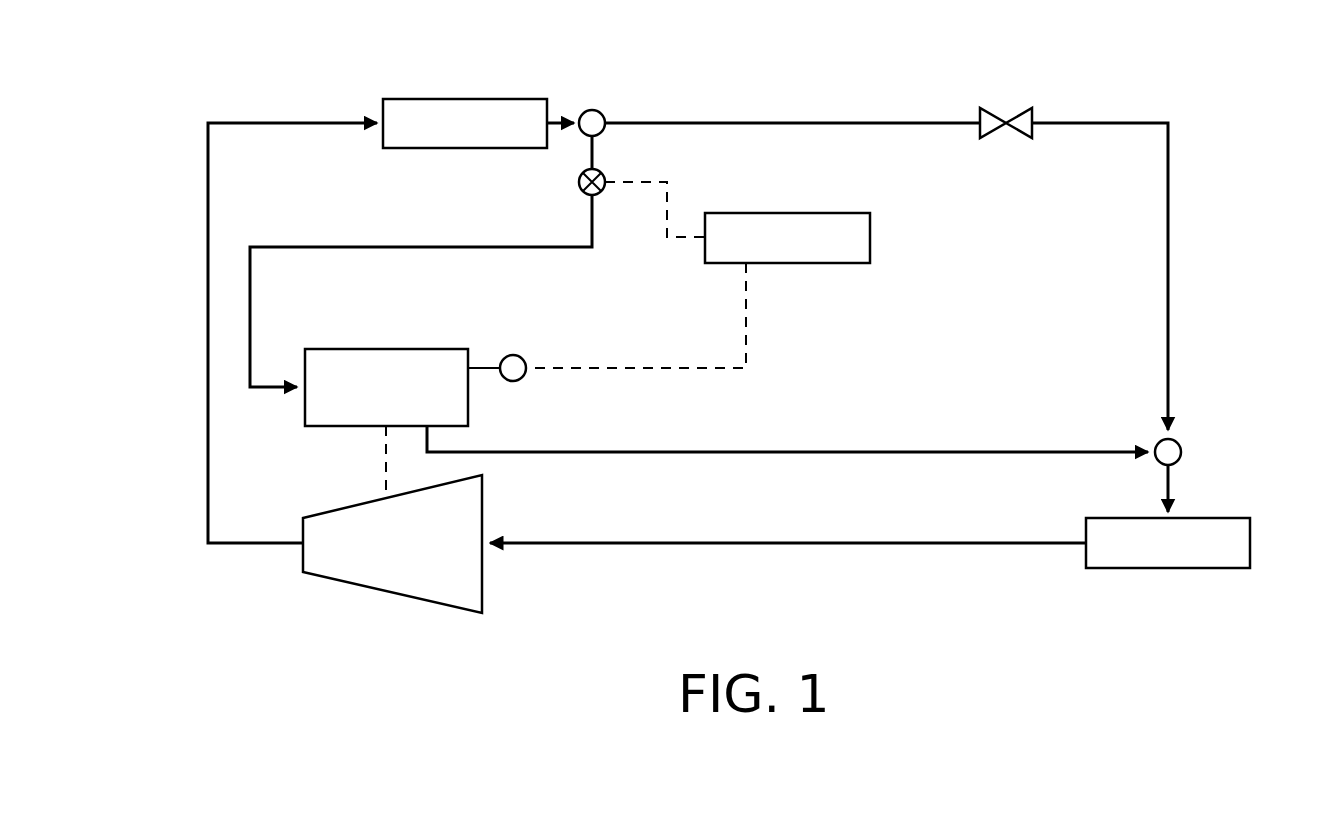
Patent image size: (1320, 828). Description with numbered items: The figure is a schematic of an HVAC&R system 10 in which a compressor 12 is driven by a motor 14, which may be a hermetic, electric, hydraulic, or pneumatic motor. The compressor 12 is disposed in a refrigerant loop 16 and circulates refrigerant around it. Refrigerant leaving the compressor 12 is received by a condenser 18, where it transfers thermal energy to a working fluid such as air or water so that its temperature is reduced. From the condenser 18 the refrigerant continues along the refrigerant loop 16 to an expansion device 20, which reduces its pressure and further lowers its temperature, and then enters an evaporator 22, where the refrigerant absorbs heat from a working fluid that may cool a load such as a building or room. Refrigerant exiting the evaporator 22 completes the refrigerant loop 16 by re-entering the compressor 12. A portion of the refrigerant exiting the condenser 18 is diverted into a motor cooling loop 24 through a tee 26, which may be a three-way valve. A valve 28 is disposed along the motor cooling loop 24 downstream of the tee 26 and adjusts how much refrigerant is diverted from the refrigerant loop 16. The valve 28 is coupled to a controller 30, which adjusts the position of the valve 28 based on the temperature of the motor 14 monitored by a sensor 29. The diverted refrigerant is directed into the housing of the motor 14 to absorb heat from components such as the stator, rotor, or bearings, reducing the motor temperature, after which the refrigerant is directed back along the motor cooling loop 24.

The HVAC&R system 10 is at (1066, 64).
The compressor 12 is at (392, 593).
The motor 14 is at (428, 349).
The refrigerant loop 16 is at (738, 123).
The condenser 18 is at (465, 99).
The expansion device 20 is at (995, 113).
The evaporator 22 is at (1210, 518).
The motor cooling loop 24 is at (592, 218).
The tee 26 is at (605, 113).
The valve 28 is at (600, 172).
The sensor 29 is at (524, 358).
The controller 30 is at (787, 213).